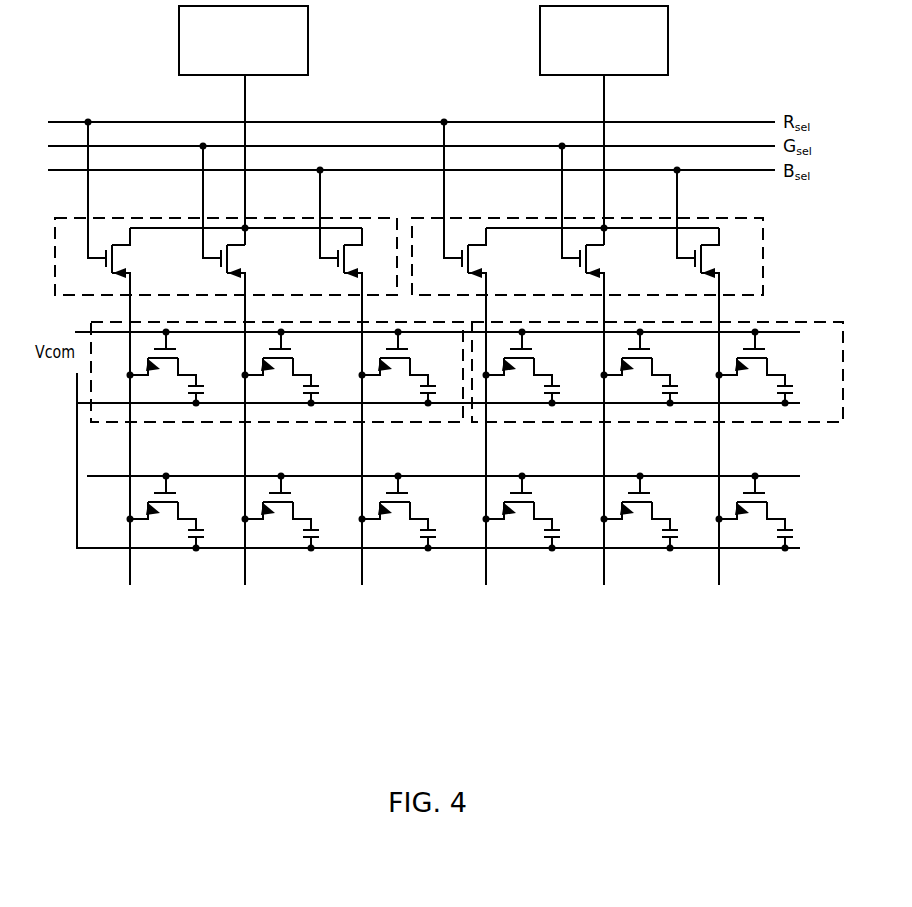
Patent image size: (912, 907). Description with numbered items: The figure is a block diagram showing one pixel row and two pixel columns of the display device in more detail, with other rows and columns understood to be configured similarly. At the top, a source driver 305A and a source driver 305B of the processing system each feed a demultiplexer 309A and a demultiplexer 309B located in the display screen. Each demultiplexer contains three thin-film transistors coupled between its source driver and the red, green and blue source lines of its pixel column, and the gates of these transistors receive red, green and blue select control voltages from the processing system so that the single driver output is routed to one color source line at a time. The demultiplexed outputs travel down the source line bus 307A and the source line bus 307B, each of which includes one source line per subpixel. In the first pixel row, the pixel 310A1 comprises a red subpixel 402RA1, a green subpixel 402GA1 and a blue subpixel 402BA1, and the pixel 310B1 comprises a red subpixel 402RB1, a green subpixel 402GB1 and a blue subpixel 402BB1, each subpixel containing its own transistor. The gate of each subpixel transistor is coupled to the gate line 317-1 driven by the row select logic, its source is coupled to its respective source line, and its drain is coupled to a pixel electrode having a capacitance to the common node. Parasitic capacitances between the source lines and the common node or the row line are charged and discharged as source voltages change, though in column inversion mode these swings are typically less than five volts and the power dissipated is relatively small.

The source driver 305A is at (262, 60).
The source driver 305B is at (622, 60).
The demultiplexer 309A is at (386, 218).
The demultiplexer 309B is at (752, 218).
The gate line 317-1 is at (220, 331).
The pixel 310A1 is at (273, 392).
The pixel 310B1 is at (659, 397).
The subpixel 402RA1 is at (162, 382).
The subpixel 402GA1 is at (277, 382).
The subpixel 402BA1 is at (394, 382).
The subpixel 402RB1 is at (518, 382).
The subpixel 402GB1 is at (636, 382).
The subpixel 402BB1 is at (751, 382).
The source line bus 307A is at (365, 607).
The source line bus 307B is at (726, 607).